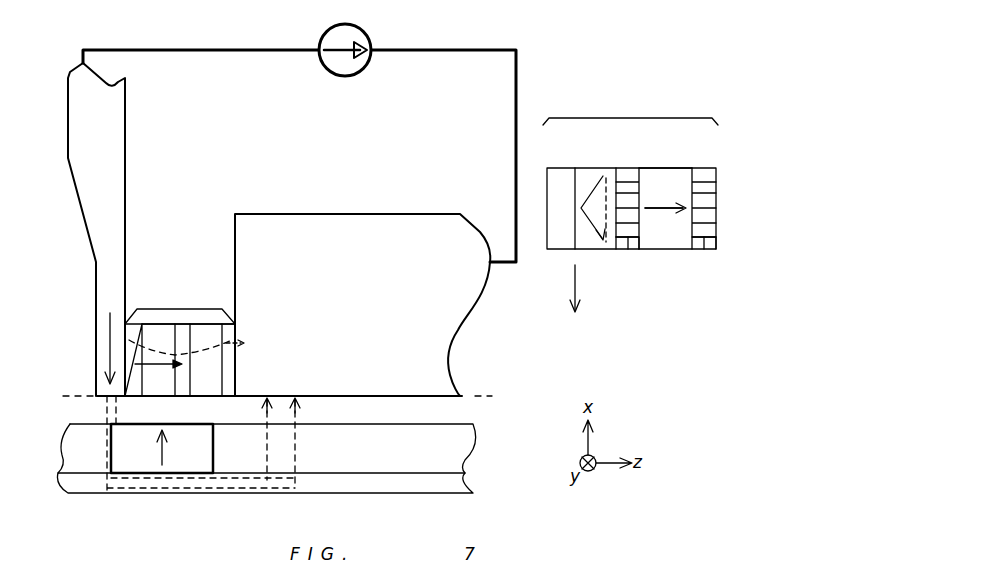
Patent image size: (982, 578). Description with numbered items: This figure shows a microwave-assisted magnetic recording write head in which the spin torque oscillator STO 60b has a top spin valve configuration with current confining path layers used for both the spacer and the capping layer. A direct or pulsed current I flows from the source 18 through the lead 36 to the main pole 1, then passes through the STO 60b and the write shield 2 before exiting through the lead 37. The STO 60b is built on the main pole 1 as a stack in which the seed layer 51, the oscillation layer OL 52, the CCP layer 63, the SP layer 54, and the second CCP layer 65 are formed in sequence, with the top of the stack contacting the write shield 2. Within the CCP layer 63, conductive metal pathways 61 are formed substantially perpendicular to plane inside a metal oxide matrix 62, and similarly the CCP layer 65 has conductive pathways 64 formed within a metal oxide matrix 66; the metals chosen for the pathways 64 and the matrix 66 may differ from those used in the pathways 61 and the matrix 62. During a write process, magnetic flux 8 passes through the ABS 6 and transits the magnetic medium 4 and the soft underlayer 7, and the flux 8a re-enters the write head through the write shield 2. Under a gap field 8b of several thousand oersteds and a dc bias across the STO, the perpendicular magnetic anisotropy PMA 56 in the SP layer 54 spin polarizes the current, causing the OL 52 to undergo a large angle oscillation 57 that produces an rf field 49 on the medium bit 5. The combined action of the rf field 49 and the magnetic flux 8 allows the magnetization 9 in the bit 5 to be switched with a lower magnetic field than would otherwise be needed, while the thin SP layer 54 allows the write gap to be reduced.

The main pole 1 is at (85, 213).
The write shield 2 is at (443, 330).
The magnetic medium 4 is at (463, 448).
The medium bit 5 is at (188, 465).
The ABS 6 is at (278, 380).
The soft underlayer 7 is at (455, 480).
The magnetic flux 8 is at (108, 337).
The flux 8a is at (272, 413).
The gap field 8b is at (231, 345).
The magnetization 9 is at (160, 450).
The source 18 is at (368, 32).
The lead 36 is at (238, 48).
The lead 37 is at (518, 68).
The rf field 49 is at (564, 290).
The seed layer 51 is at (134, 388).
The OL 52 is at (162, 388).
The SP layer 54 is at (207, 388).
The PMA 56 is at (660, 210).
The large angle oscillation 57 is at (605, 246).
The STO 60b is at (179, 304).
The conductive metal pathways 61 is at (624, 240).
The metal oxide matrix 62 is at (634, 242).
The CCP layer 63 is at (186, 388).
The conductive pathways 64 is at (698, 240).
The CCP layer 65 is at (228, 388).
The metal oxide matrix 66 is at (709, 242).